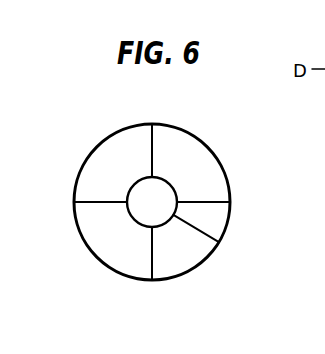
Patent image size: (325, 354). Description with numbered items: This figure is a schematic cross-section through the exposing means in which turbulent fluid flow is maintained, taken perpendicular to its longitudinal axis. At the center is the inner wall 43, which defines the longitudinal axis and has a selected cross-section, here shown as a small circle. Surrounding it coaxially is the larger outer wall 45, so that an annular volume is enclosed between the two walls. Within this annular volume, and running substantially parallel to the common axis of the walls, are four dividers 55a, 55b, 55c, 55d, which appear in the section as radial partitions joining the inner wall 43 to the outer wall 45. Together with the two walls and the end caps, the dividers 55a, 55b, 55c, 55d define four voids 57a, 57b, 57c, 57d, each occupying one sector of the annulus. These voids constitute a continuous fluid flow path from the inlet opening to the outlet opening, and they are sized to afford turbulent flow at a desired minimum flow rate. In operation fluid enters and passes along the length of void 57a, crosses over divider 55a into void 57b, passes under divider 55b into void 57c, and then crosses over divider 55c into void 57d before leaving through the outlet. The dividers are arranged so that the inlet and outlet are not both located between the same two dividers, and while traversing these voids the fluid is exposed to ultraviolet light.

The inner wall 43 is at (220, 240).
The outer wall 45 is at (200, 138).
The divider 55a is at (92, 195).
The divider 55b is at (152, 144).
The divider 55c is at (217, 205).
The divider 55d is at (148, 258).
The void 57a is at (118, 158).
The void 57b is at (215, 188).
The void 57c is at (184, 252).
The void 57d is at (103, 231).